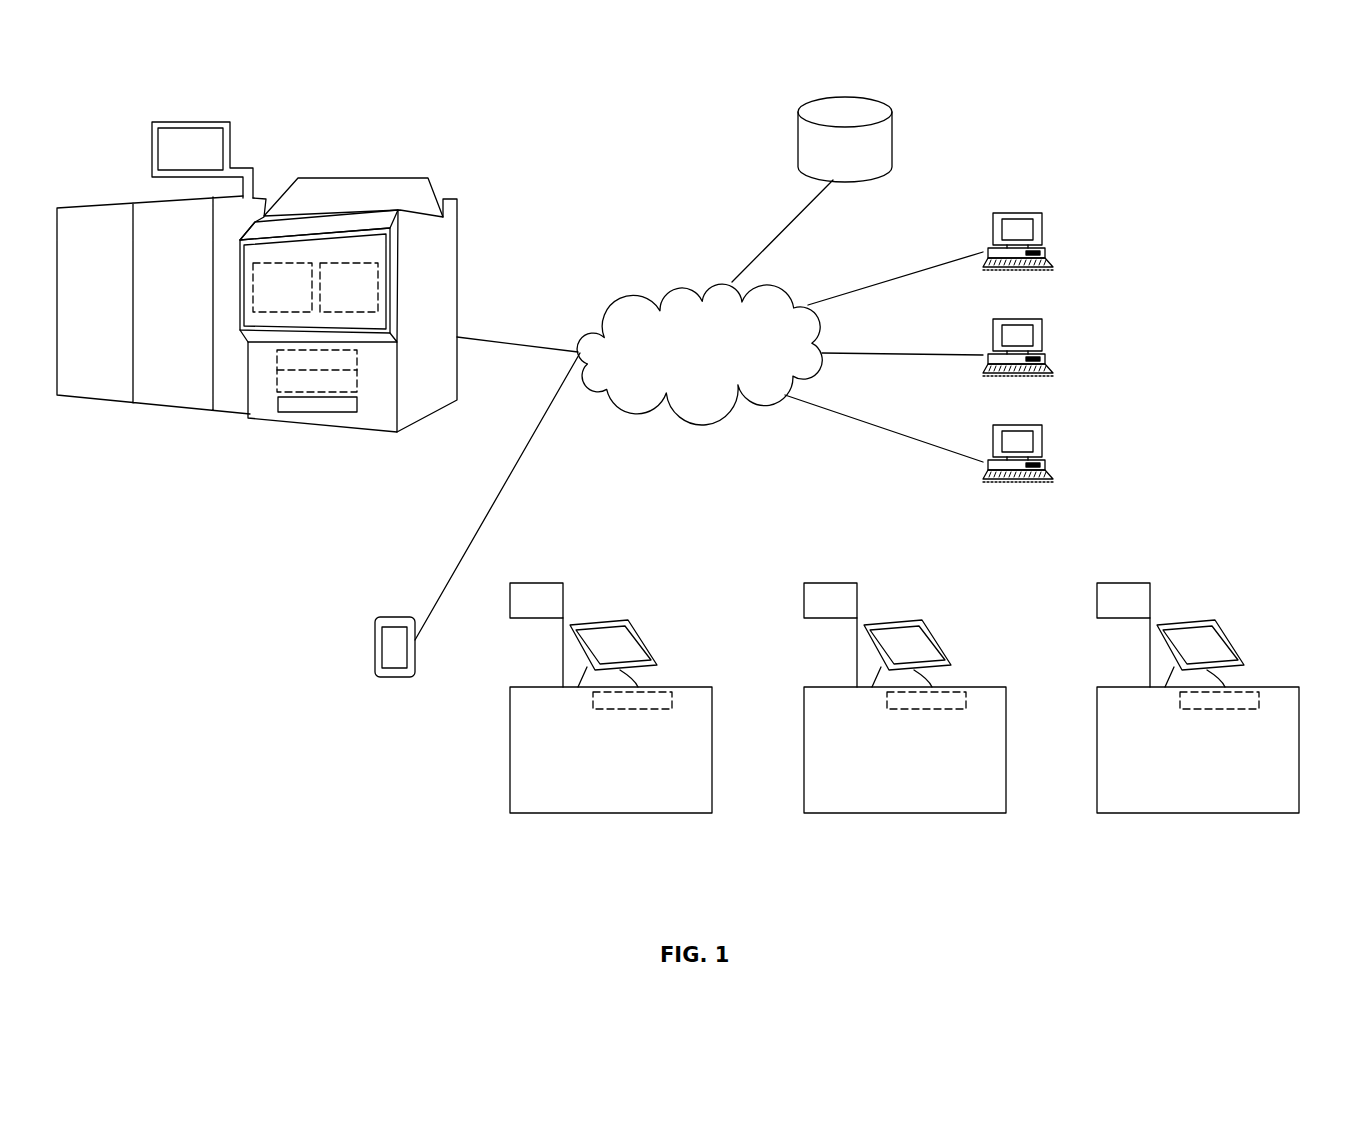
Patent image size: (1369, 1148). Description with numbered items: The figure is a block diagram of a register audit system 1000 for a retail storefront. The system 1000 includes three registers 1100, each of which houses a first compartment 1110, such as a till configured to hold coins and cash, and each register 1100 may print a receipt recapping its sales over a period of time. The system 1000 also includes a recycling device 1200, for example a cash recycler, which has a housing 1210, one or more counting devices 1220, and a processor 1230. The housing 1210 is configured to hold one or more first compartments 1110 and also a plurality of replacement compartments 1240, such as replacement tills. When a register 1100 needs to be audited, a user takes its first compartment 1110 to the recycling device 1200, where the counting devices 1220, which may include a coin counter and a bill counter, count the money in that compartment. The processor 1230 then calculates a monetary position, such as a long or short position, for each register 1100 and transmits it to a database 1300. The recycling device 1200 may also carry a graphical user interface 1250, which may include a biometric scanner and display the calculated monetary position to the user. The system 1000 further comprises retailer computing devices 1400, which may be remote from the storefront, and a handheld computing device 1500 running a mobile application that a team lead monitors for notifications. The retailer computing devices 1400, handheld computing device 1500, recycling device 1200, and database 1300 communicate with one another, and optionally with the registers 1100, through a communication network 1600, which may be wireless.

The register audit system 1000 is at (1240, 125).
The register 1100 is at (896, 749).
The first compartment 1110 is at (665, 698).
The recycling device 1200 is at (467, 177).
The housing 1210 is at (265, 402).
The counting device 1220 is at (282, 287).
The processor 1230 is at (349, 287).
The replacement compartment 1240 is at (357, 363).
The graphical user interface 1250 is at (152, 123).
The database 1300 is at (865, 96).
The retailer computing device 1400 is at (1059, 330).
The handheld computing device 1500 is at (375, 648).
The communication network 1600 is at (699, 354).